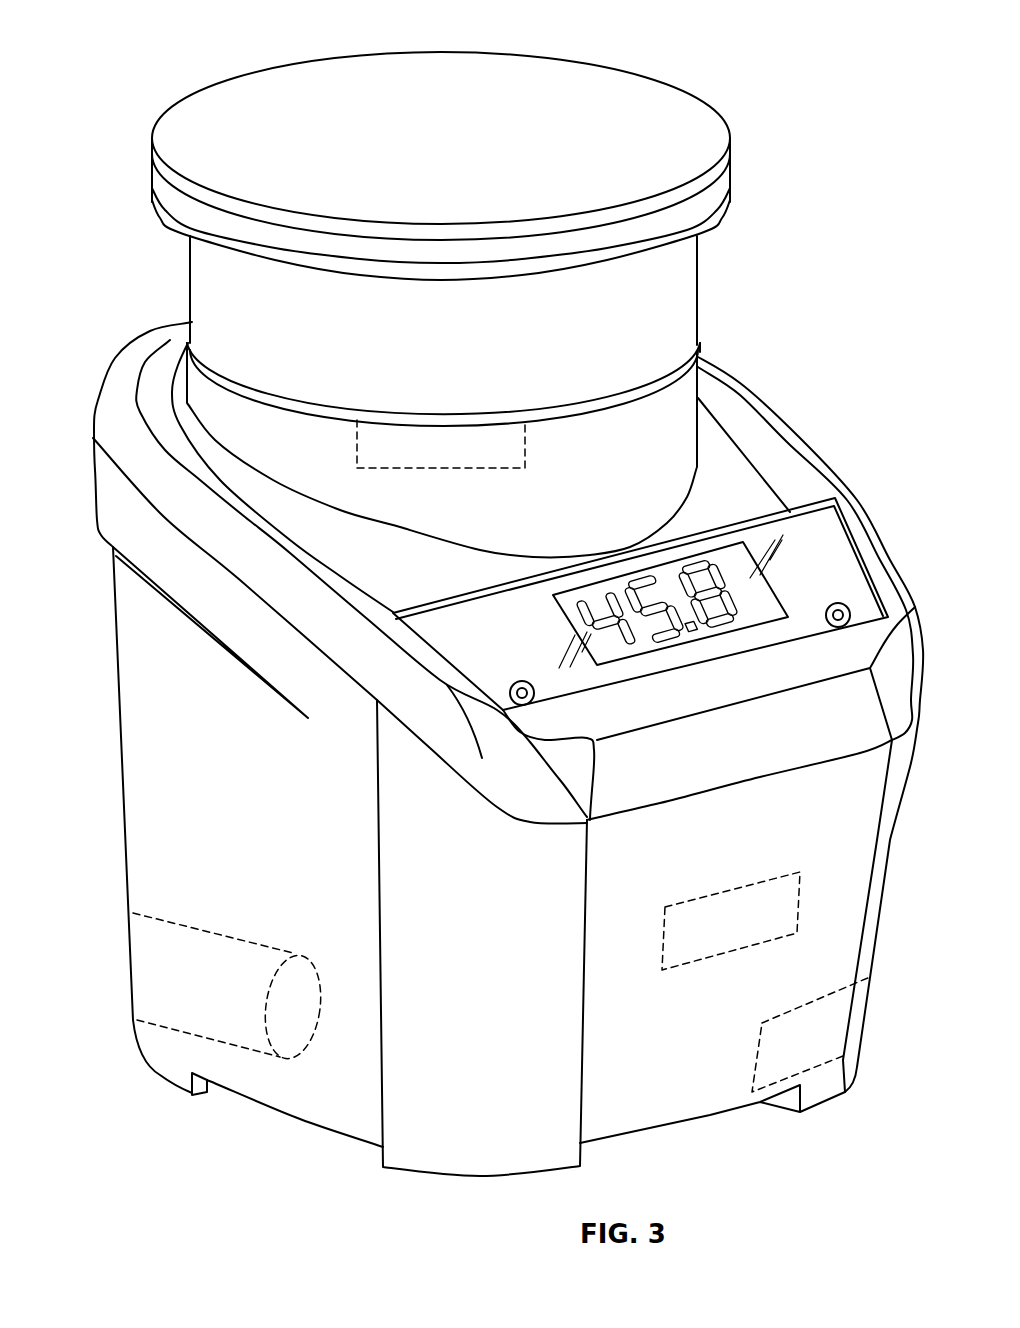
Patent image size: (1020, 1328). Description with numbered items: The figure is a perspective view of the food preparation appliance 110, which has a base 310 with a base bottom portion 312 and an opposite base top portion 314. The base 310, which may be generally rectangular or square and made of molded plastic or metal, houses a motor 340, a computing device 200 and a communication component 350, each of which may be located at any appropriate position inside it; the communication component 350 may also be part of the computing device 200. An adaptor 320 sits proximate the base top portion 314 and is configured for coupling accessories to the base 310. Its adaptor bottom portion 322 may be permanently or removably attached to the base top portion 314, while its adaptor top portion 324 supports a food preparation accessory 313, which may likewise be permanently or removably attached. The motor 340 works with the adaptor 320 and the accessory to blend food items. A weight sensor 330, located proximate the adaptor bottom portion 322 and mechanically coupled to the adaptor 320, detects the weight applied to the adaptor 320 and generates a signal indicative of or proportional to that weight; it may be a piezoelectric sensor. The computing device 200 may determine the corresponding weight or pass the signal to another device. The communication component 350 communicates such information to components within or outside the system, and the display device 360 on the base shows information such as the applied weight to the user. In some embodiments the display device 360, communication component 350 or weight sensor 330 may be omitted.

The food preparation appliance 110 is at (817, 48).
The food preparation accessory 313 is at (157, 178).
The adaptor top portion 324 is at (717, 210).
The adaptor 320 is at (682, 275).
The adaptor bottom portion 322 is at (697, 352).
The weight sensor 330 is at (522, 456).
The base top portion 314 is at (130, 350).
The base 310 is at (125, 795).
The base bottom portion 312 is at (445, 1176).
The display device 360 is at (848, 548).
The motor 340 is at (150, 968).
The computing device 200 is at (795, 872).
The communication component 350 is at (838, 1018).